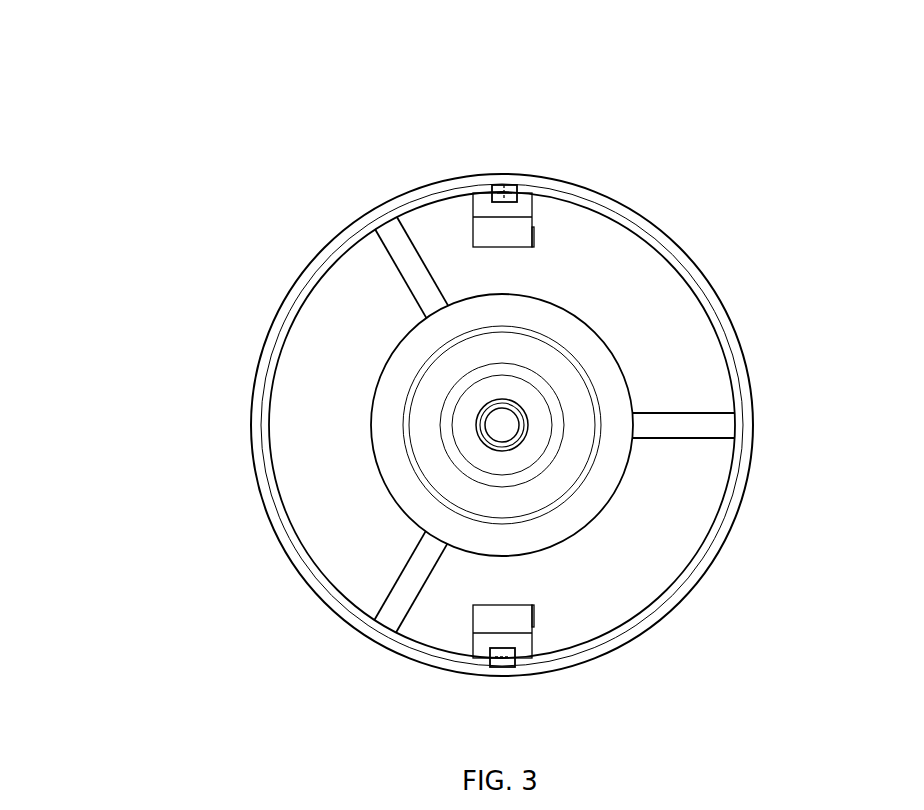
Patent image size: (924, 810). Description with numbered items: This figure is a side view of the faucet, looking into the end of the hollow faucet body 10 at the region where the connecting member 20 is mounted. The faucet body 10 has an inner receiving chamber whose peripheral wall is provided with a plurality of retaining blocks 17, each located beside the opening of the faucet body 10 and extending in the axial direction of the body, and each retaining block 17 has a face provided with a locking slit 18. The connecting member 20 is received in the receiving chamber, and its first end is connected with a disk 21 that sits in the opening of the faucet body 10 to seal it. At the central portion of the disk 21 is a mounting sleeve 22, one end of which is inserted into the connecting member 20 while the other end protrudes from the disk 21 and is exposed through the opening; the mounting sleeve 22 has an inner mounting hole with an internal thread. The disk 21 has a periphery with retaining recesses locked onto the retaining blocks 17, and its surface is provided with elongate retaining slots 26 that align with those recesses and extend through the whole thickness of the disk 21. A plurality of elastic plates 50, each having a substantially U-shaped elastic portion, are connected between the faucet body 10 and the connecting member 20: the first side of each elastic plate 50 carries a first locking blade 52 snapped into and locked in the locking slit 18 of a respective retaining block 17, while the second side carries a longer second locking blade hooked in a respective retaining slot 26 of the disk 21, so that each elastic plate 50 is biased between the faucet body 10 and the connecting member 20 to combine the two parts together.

The faucet body 10 is at (252, 376).
The retaining block 17 is at (490, 190).
The locking slit 18 is at (504, 185).
The connecting member 20 is at (716, 513).
The disk 21 is at (690, 380).
The mounting sleeve 22 is at (402, 487).
The retaining slot 26 is at (534, 615).
The elastic plate 50 is at (475, 630).
The first locking blade 52 is at (523, 207).